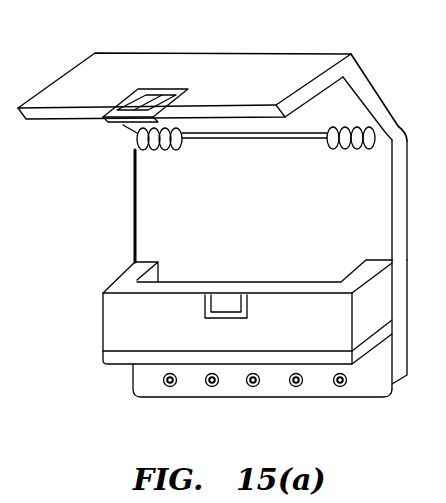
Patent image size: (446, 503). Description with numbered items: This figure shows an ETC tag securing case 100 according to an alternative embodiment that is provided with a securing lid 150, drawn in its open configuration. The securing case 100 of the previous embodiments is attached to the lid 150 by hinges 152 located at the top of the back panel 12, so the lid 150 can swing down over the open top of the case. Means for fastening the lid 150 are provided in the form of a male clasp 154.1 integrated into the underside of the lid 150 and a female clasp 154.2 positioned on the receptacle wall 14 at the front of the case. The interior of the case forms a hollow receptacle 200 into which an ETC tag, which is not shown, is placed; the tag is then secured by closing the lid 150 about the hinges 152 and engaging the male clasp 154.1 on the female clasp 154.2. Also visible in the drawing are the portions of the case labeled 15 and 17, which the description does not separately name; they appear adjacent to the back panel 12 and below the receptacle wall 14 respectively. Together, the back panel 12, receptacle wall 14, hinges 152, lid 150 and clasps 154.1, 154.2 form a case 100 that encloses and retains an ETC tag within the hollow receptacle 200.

The securing case 100 is at (90, 202).
The securing lid 150 is at (355, 55).
The hinges 152 is at (170, 149).
The male clasp 154.1 is at (155, 90).
The female clasp 154.2 is at (250, 307).
The hollow receptacle 200 is at (262, 270).
The back panel 12 is at (407, 163).
The receptacle wall 14 is at (104, 323).
The side wall 15 is at (418, 306).
The mounting flange 17 is at (103, 357).